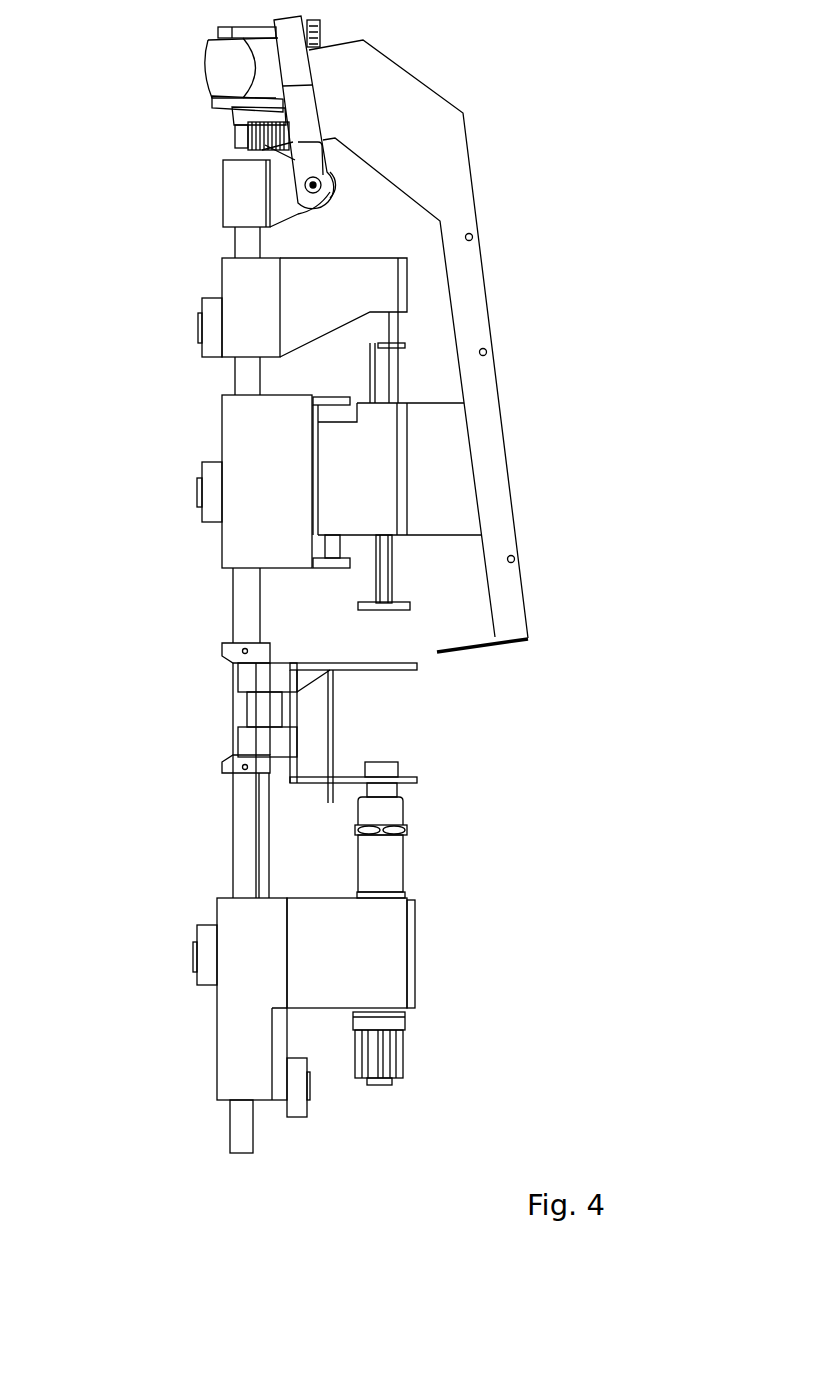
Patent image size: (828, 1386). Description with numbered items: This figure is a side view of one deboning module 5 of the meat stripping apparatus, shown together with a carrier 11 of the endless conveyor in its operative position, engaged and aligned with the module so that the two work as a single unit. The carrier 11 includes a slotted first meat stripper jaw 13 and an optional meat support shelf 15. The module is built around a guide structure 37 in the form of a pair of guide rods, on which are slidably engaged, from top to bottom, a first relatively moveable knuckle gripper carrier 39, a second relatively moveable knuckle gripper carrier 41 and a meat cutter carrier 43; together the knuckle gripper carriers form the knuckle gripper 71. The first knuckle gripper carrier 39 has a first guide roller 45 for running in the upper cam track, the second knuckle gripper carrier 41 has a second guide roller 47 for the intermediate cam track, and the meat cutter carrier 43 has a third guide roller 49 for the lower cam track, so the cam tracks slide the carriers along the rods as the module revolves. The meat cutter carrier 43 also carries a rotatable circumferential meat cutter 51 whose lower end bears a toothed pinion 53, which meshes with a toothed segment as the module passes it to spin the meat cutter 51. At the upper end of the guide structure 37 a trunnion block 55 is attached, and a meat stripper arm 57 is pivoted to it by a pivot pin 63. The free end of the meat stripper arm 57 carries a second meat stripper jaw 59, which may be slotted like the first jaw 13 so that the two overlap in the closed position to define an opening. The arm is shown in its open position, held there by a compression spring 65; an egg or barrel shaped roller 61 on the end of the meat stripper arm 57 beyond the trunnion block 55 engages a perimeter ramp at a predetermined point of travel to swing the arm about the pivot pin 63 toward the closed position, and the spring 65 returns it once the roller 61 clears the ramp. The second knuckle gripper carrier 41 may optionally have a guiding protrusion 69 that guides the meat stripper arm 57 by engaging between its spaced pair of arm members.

The deboning module 5 is at (500, 135).
The carrier 11 is at (250, 679).
The first meat stripper jaw 13 is at (417, 670).
The meat support shelf 15 is at (417, 780).
The guide structure 37 is at (247, 868).
The first relatively moveable knuckle gripper carrier 39 is at (350, 286).
The second relatively moveable knuckle gripper carrier 41 is at (250, 435).
The meat cutter carrier 43 is at (247, 1033).
The first guide roller 45 is at (213, 308).
The second guide roller 47 is at (213, 474).
The third guide roller 49 is at (203, 975).
The meat cutter 51 is at (378, 870).
The toothed pinion 53 is at (390, 1053).
The trunnion block 55 is at (242, 184).
The meat stripper arm 57 is at (478, 385).
The second meat stripper jaw 59 is at (478, 648).
The barrel shaped roller 61 is at (219, 67).
The pivot pin 63 is at (321, 185).
The compression spring 65 is at (237, 133).
The guiding protrusion 69 is at (448, 469).
The knuckle gripper 71 is at (388, 569).